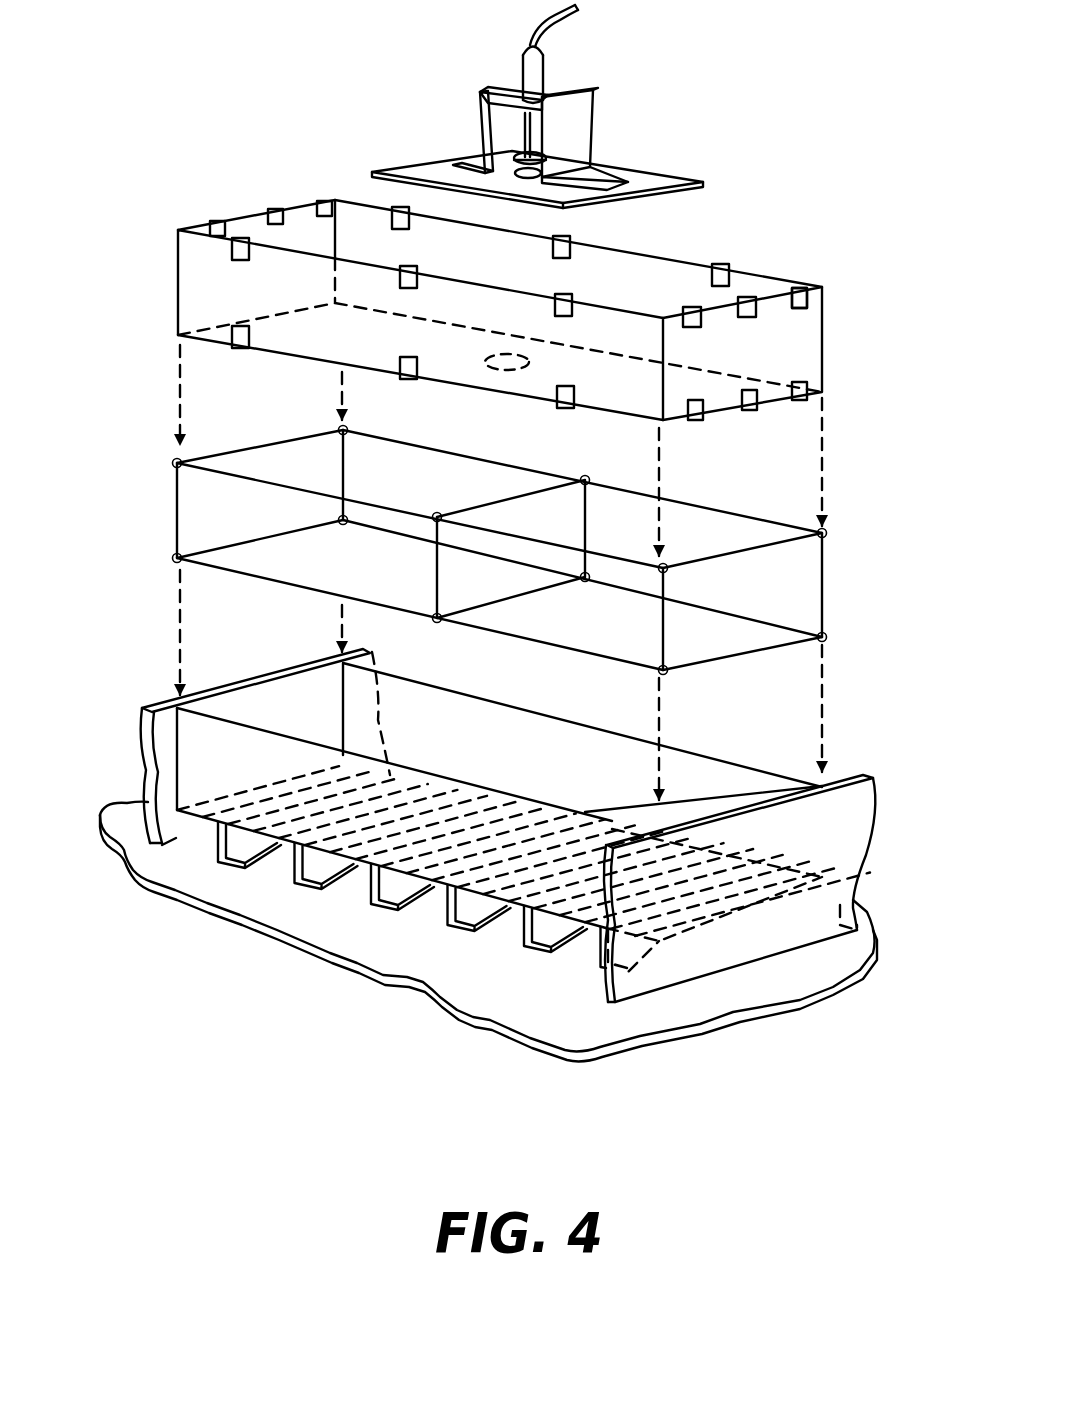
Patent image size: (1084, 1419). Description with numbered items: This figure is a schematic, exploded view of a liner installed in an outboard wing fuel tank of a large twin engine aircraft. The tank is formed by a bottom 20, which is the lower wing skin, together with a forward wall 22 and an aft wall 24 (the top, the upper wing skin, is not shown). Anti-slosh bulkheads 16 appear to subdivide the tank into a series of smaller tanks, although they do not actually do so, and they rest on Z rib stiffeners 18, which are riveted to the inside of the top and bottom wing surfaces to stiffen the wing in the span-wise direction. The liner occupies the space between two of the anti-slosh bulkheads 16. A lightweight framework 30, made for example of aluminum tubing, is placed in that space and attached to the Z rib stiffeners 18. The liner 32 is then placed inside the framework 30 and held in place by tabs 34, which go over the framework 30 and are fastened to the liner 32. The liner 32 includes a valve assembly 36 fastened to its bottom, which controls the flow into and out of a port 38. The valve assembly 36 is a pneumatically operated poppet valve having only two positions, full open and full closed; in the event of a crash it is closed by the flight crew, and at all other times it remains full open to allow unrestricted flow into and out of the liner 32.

The anti-slosh bulkheads 16 is at (205, 760).
The Z rib stiffeners 18 is at (578, 955).
The bottom 20 is at (332, 920).
The forward wall 22 is at (288, 700).
The aft wall 24 is at (785, 850).
The framework 30 is at (300, 445).
The liner 32 is at (682, 278).
The tabs 34 is at (797, 306).
The valve assembly 36 is at (606, 119).
The port 38 is at (507, 372).